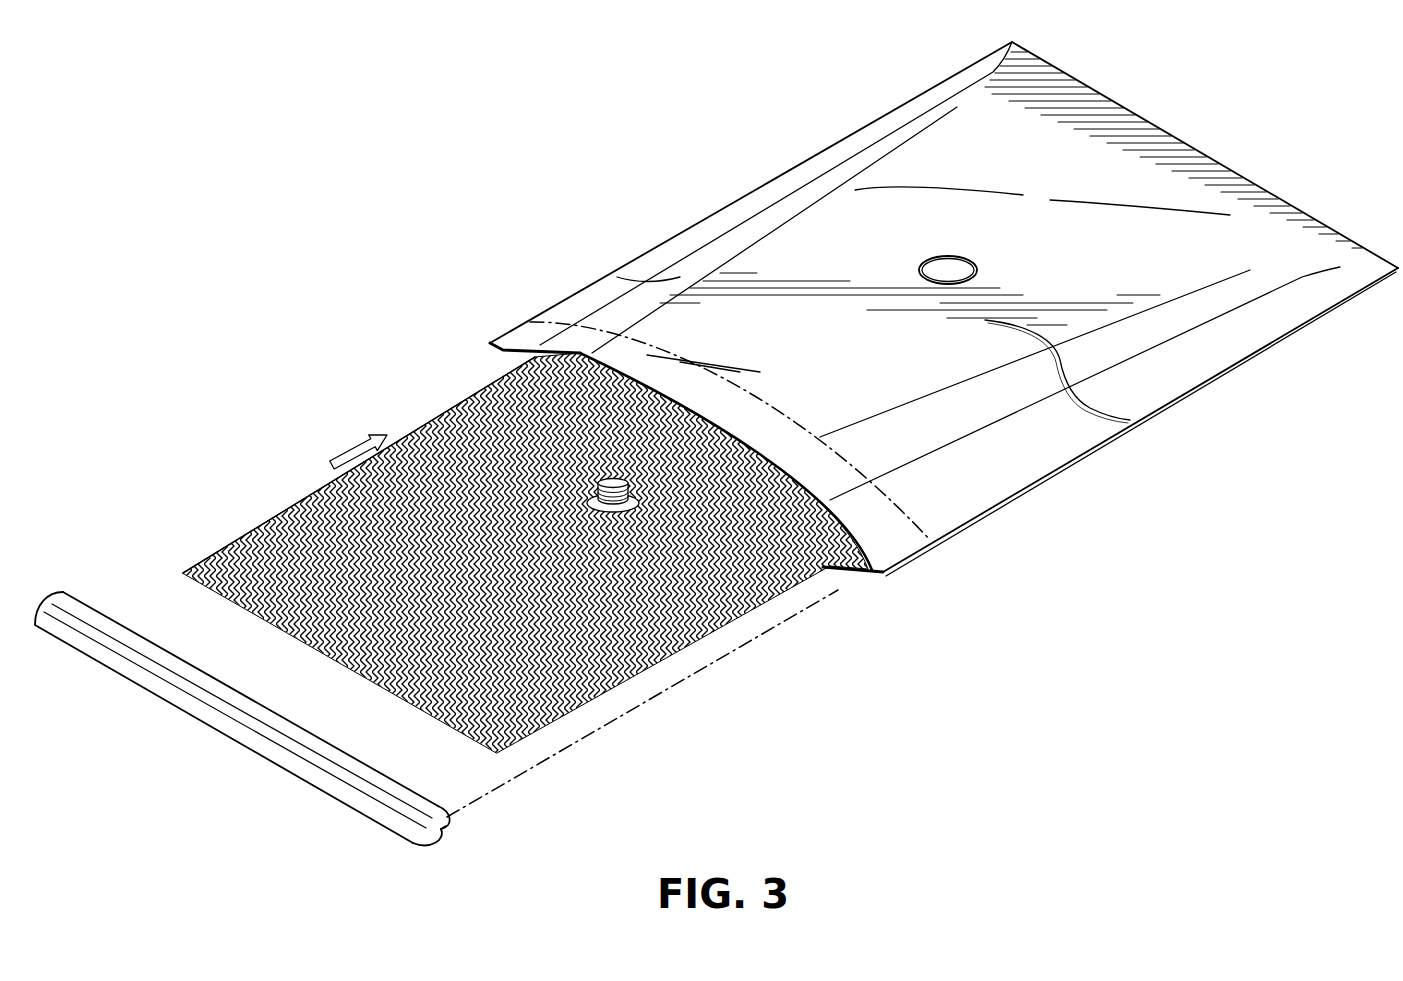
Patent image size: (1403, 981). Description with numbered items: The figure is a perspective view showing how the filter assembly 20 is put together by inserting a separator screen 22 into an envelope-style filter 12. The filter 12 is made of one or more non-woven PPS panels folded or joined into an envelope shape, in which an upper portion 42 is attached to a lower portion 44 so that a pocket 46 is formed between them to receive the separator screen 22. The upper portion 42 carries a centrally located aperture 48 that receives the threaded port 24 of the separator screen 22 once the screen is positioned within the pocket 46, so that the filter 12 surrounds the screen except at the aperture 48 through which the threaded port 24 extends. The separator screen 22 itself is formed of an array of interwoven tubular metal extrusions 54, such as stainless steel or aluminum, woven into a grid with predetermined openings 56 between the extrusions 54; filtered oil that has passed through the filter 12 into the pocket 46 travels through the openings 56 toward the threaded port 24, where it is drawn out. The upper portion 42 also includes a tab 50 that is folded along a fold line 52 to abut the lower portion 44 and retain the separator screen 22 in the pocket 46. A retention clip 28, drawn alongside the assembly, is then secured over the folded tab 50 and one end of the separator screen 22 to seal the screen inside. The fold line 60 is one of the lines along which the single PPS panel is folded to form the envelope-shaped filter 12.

The filter 12 is at (822, 153).
The filter assembly 20 is at (605, 206).
The separator screen 22 is at (251, 528).
The threaded port 24 is at (712, 427).
The retention clip 28 is at (205, 735).
The upper portion 42 is at (1068, 260).
The lower portion 44 is at (866, 573).
The pocket 46 is at (532, 359).
The aperture 48 is at (950, 257).
The tab 50 is at (524, 333).
The fold line 52 is at (817, 415).
The tubular metal extrusions 54 is at (308, 498).
The openings 56 is at (438, 427).
The fold line 60 is at (1157, 406).